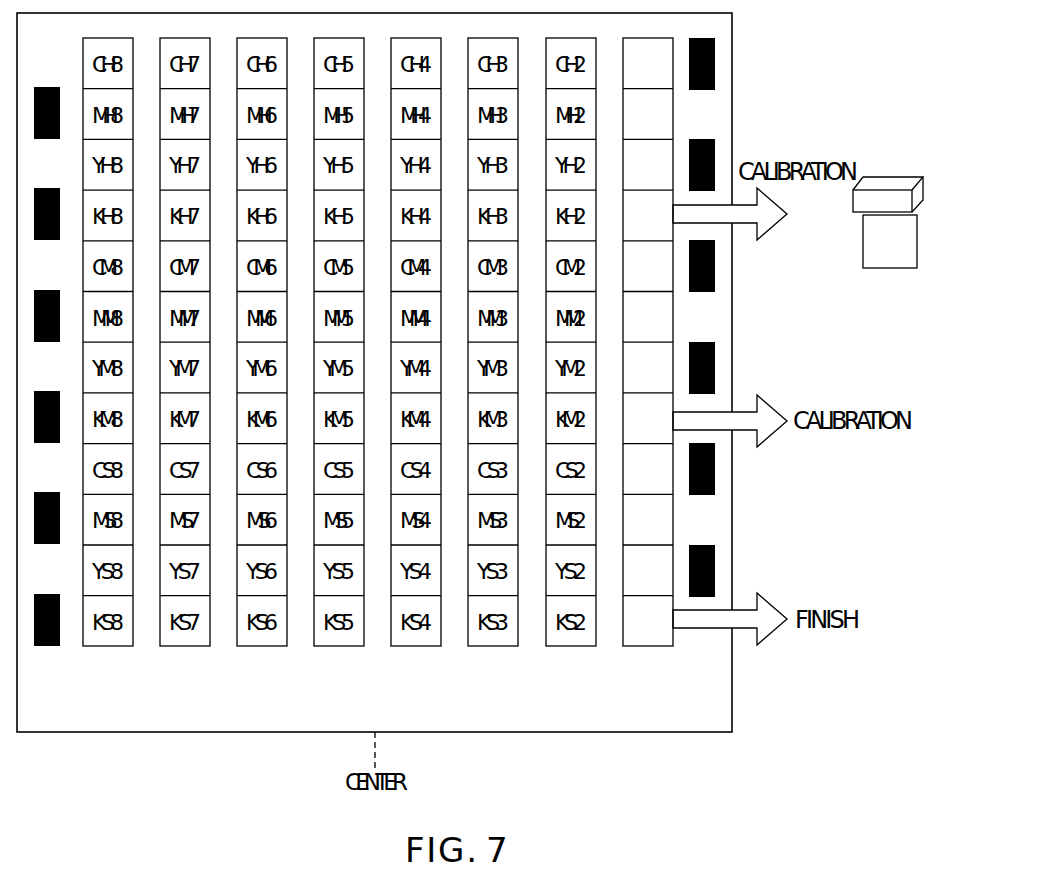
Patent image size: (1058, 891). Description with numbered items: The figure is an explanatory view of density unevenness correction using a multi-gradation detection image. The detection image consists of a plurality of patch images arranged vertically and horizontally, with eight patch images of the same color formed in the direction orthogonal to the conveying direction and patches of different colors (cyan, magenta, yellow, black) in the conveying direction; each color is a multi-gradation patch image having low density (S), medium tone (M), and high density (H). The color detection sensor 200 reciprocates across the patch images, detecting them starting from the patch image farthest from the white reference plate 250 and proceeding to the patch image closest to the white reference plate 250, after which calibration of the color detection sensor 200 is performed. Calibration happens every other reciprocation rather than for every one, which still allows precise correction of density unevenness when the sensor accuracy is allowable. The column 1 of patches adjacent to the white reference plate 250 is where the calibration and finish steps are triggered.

The color detection sensor 200 is at (896, 184).
The white reference plate 250 is at (888, 268).
The patch column 1 (CH1–KS1) 1 is at (648, 342).